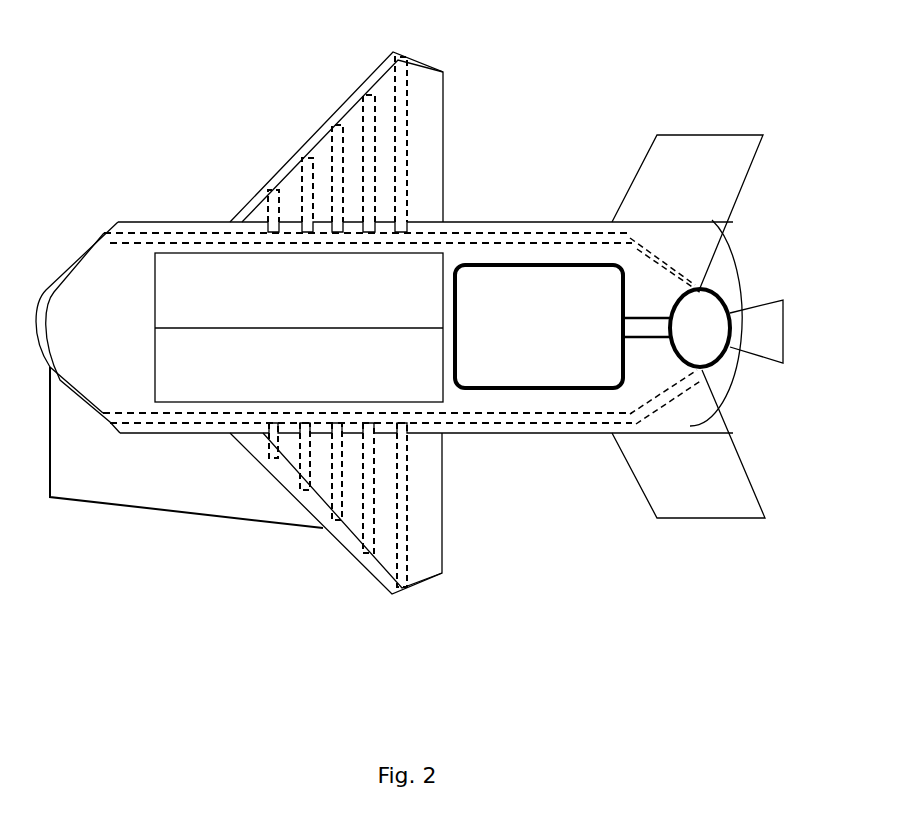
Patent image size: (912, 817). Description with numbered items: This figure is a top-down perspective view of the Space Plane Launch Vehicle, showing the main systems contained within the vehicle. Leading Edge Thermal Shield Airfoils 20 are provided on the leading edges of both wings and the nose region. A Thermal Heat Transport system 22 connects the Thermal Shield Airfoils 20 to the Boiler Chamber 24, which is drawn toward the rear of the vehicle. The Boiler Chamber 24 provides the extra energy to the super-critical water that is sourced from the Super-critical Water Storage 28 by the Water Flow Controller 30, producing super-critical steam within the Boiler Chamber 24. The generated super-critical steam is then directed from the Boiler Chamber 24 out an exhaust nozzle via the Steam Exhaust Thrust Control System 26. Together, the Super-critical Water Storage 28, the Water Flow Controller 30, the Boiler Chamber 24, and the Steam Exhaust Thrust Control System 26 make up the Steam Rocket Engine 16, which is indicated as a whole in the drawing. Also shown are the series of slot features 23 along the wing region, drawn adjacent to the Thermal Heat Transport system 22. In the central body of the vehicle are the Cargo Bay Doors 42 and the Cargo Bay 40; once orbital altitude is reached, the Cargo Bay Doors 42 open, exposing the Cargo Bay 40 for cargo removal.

The Steam Rocket Engine 16 is at (601, 470).
The Leading Edge Thermal Shield Airfoils 20 is at (179, 451).
The Thermal Heat Transport system 22 is at (405, 128).
The slots 23 is at (263, 212).
The Boiler Chamber 24 is at (687, 315).
The Steam Exhaust Thrust Control System 26 is at (777, 300).
The Super-critical Water Storage 28 is at (529, 350).
The Water Flow Controller 30 is at (645, 325).
The Cargo Bay 40 is at (178, 368).
The Cargo Bay Doors 42 is at (165, 262).